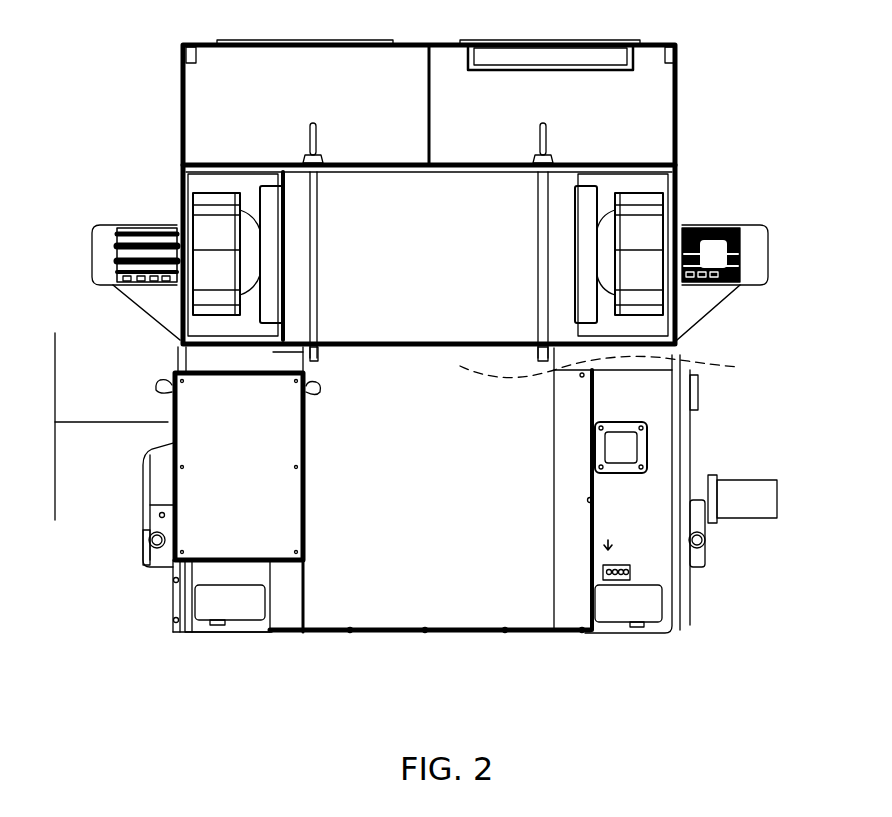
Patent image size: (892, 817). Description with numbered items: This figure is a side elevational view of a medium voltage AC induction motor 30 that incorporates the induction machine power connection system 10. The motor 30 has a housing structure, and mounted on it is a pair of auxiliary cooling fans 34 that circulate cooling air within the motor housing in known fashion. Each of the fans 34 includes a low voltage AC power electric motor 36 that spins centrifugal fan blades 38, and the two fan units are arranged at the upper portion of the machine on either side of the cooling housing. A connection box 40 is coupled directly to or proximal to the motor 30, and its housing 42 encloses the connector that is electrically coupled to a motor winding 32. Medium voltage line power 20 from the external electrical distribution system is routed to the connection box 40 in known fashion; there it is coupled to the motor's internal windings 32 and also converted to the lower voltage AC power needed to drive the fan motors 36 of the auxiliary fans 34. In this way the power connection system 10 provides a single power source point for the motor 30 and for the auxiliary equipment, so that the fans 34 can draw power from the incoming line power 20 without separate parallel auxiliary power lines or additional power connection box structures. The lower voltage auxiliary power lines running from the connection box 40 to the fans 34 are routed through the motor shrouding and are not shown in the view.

The induction machine power connection system 10 is at (176, 655).
The medium voltage AC power line 20 is at (55, 362).
The AC induction motor 30 is at (393, 644).
The motor winding 32 is at (609, 369).
The auxiliary cooling fan 34 is at (76, 254).
The low voltage AC power electric motor 36 is at (135, 224).
The centrifugal fan blades 38 is at (215, 193).
The connection box 40 is at (315, 449).
The housing 42 is at (282, 560).